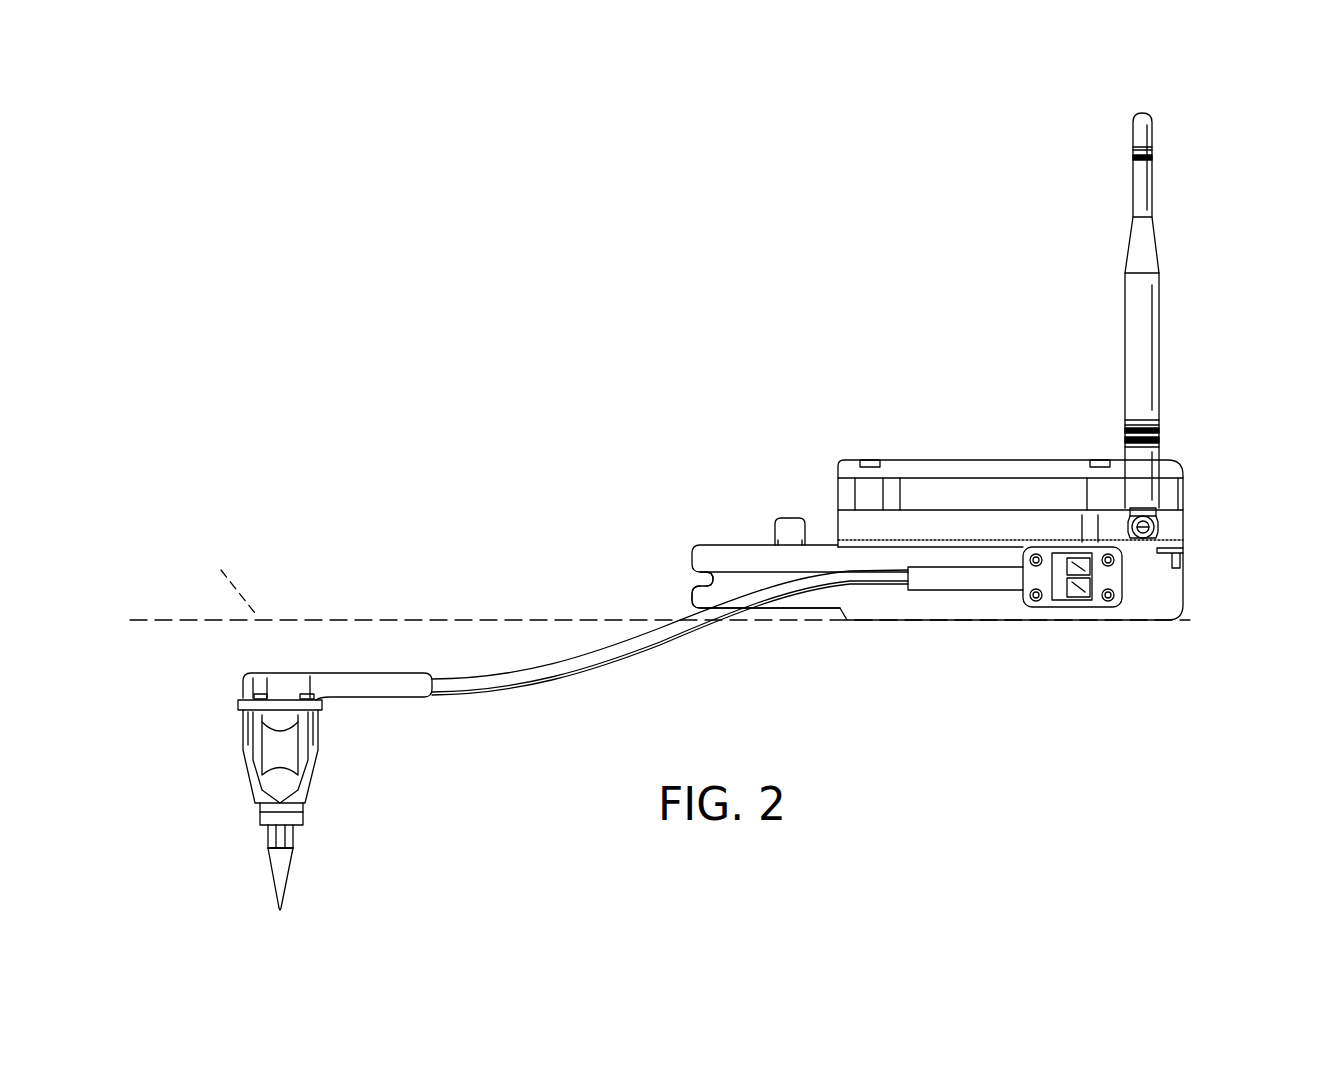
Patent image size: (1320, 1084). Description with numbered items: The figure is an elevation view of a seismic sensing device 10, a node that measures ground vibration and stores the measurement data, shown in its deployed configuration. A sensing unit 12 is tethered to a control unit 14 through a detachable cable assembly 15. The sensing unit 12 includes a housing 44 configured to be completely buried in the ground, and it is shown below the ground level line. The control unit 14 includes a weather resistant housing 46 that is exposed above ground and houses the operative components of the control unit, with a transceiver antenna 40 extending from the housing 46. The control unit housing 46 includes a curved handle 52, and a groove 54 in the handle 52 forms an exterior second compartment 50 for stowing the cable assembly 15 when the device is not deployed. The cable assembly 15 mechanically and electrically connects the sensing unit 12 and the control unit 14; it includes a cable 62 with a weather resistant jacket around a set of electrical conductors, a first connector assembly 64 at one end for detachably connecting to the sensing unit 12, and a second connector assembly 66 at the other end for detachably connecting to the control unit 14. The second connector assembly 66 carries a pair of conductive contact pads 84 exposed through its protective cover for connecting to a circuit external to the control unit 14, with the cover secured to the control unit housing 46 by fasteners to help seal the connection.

The seismic sensing device 10 is at (765, 665).
The sensing unit 12 is at (356, 733).
The control unit 14 is at (976, 440).
The detachable cable assembly 15 is at (548, 702).
The transceiver antenna 40 is at (1150, 314).
The housing 44 is at (293, 785).
The weather resistant housing 46 is at (913, 480).
The exterior second compartment 50 is at (708, 576).
The curved handle 52 is at (739, 552).
The groove 54 is at (706, 582).
The cable 62 is at (487, 689).
The first connector assembly 64 is at (313, 663).
The second connector assembly 66 is at (1015, 610).
The conductive contact pads 84 is at (1070, 576).